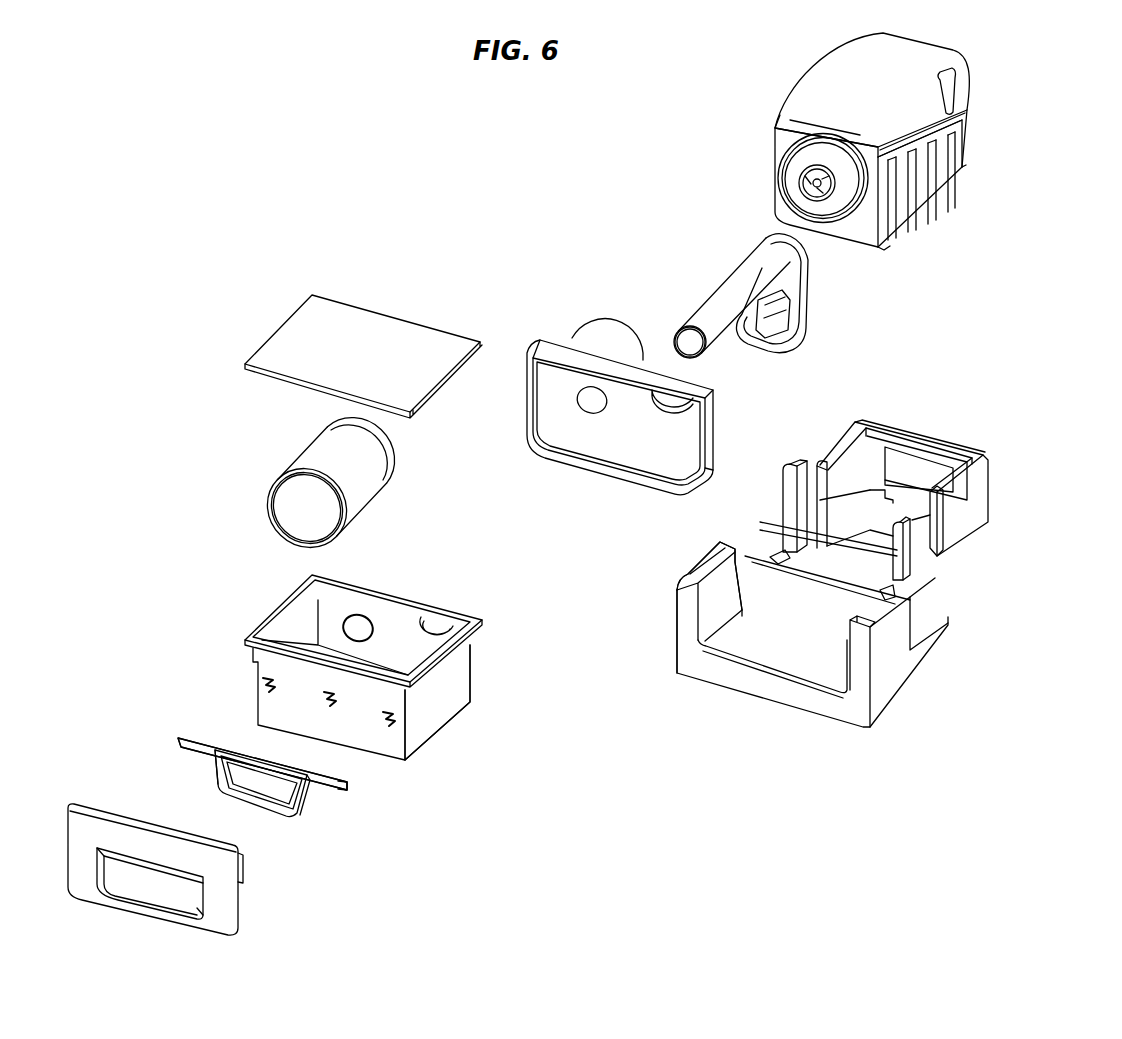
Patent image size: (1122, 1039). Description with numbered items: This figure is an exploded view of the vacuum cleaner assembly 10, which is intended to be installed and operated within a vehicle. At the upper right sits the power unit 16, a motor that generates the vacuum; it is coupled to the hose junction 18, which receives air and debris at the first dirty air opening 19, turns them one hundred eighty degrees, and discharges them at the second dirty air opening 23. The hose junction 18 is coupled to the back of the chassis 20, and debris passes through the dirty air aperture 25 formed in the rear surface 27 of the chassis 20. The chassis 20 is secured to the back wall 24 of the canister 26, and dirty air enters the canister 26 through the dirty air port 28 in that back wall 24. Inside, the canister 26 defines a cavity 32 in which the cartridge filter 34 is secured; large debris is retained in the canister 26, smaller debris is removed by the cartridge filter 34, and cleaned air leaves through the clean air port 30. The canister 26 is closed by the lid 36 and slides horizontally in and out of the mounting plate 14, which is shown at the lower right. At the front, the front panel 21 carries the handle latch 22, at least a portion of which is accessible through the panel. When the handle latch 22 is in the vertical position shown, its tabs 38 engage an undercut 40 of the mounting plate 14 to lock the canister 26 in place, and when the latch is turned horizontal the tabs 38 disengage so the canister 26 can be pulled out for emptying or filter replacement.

The vacuum cleaner assembly 10 is at (367, 215).
The mounting plate 14 is at (775, 607).
The power unit 16 is at (860, 85).
The hose junction 18 is at (725, 285).
The first dirty air opening 19 is at (688, 352).
The chassis 20 is at (620, 370).
The front panel 21 is at (212, 918).
The handle latch 22 is at (338, 795).
The second dirty air opening 23 is at (768, 321).
The back wall 24 is at (408, 648).
The dirty air aperture 25 is at (680, 405).
The canister 26 is at (452, 688).
The rear surface 27 is at (632, 418).
The dirty air port 28 is at (455, 620).
The clean air port 30 is at (372, 612).
The cavity 32 is at (334, 636).
The cartridge filter 34 is at (357, 477).
The lid 36 is at (380, 342).
The tabs 38 is at (178, 736).
The undercut 40 is at (685, 585).